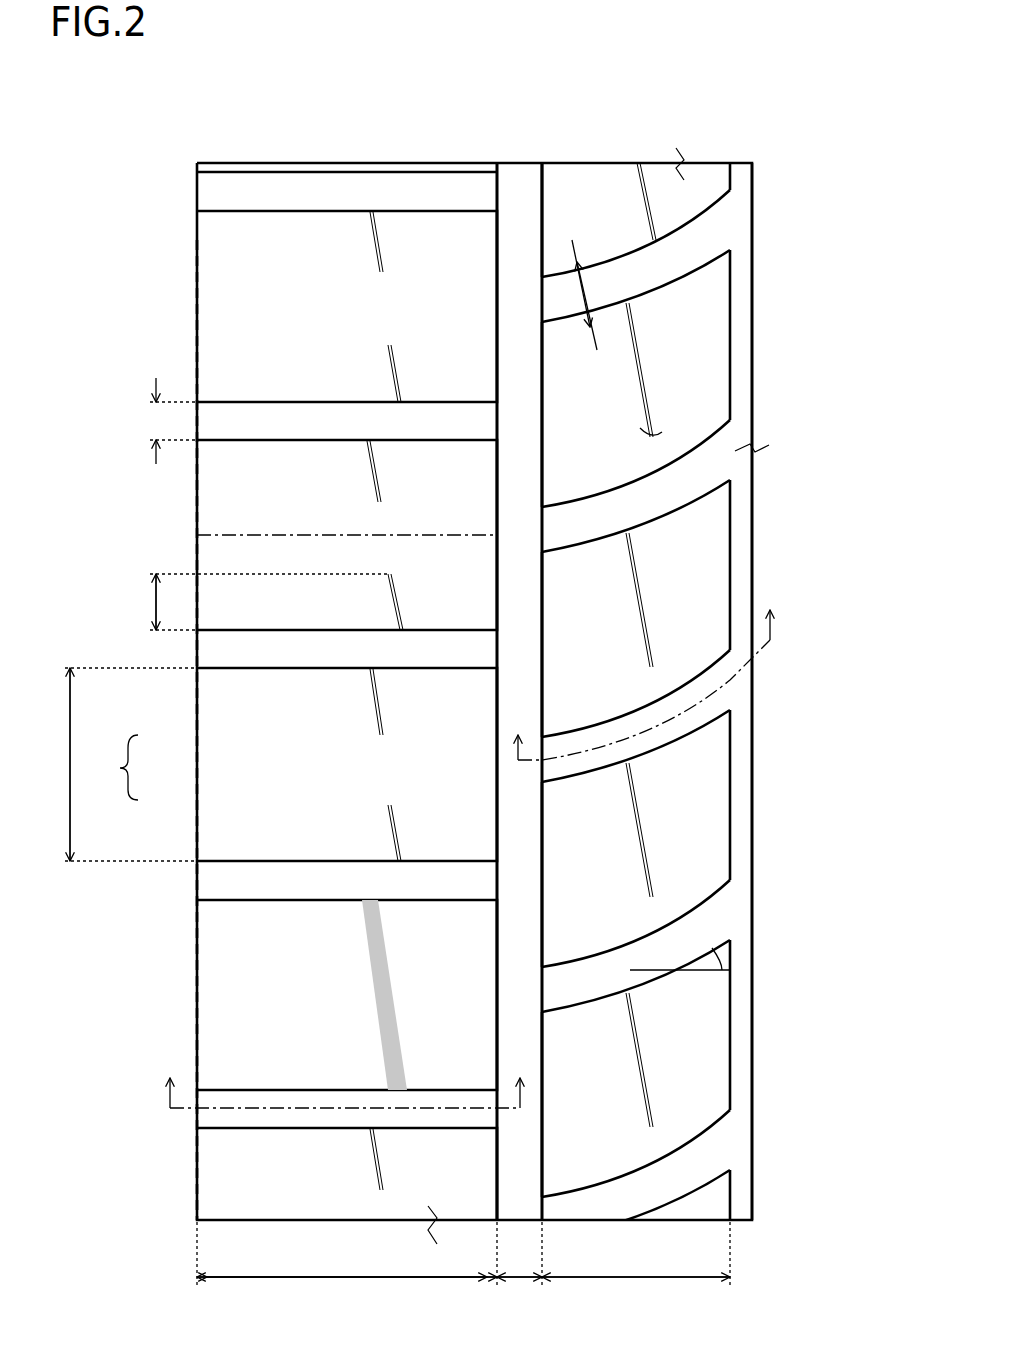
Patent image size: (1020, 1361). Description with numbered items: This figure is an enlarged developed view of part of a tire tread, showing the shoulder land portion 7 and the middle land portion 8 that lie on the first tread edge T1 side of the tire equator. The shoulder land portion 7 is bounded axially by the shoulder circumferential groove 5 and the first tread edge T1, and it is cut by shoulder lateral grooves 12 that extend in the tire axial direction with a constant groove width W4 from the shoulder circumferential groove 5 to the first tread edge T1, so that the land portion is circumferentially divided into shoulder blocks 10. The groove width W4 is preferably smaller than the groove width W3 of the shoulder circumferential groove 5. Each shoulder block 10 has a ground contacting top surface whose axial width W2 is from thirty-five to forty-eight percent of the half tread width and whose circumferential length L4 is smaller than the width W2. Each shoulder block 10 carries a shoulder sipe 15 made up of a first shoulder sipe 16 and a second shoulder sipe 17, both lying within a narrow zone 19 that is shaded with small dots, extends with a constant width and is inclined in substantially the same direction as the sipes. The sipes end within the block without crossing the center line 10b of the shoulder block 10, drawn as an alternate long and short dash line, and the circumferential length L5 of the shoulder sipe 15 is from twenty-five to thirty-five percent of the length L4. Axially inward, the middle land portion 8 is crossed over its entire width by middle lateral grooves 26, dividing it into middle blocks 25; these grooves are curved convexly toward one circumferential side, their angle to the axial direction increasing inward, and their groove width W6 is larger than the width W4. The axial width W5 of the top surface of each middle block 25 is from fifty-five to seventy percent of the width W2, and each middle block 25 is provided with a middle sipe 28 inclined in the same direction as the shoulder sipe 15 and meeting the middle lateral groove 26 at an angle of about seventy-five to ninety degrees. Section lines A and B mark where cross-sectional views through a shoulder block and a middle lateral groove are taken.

The first tread edge T1 is at (195, 224).
The shoulder circumferential groove 5 is at (516, 232).
The shoulder land portion 7 is at (318, 242).
The middle land portion 8 is at (611, 215).
The shoulder block 10 is at (282, 308).
The center line of the shoulder block 10b is at (282, 537).
The shoulder lateral groove 12 is at (272, 195).
The shoulder sipe 15 is at (115, 767).
The first shoulder sipe 16 is at (392, 812).
The second shoulder sipe 17 is at (372, 702).
The narrow zone 19 is at (380, 995).
The middle block 25 is at (686, 363).
The middle lateral groove 26 is at (663, 265).
The middle sipe 28 is at (641, 343).
The width of the ground contacting top surface of the shoulder block W2 is at (347, 1270).
The groove width of the shoulder circumferential groove W3 is at (519, 1270).
The groove width of the shoulder lateral groove W4 is at (152, 421).
The width of the ground contacting top surface of the middle block W5 is at (636, 1270).
The groove width of the middle lateral groove W6 is at (580, 297).
The length of the ground contacting top surface of the shoulder block L4 is at (113, 764).
The length of the shoulder sipe L5 is at (254, 602).
The line A- A is at (344, 1078).
The line B- B is at (644, 668).